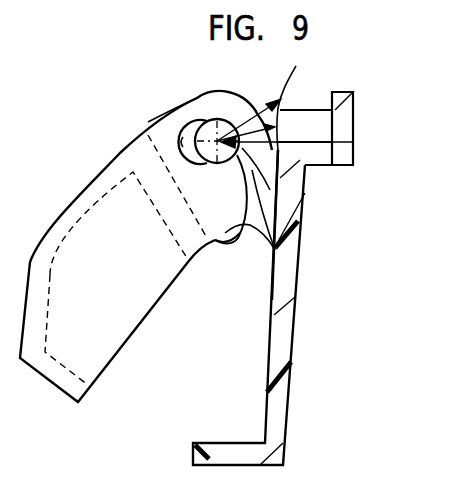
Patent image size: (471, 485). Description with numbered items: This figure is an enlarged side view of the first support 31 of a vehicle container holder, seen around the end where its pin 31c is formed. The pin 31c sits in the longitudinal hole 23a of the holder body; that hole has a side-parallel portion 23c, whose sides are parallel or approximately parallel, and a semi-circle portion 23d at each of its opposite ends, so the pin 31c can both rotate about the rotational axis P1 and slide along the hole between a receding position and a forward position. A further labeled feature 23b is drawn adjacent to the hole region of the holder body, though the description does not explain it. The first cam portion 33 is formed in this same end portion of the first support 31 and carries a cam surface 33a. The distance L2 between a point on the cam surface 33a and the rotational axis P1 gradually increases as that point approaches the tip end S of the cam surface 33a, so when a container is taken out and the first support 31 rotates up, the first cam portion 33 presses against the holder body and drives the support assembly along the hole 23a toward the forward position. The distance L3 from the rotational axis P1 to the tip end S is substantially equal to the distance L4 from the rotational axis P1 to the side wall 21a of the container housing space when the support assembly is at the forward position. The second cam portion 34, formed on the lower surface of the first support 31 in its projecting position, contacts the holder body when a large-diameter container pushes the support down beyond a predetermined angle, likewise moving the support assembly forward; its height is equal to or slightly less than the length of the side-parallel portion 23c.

The longitudinal hole 23a is at (183, 143).
The horizontal reference line 23b is at (318, 148).
The side-parallel portion 23c is at (195, 118).
The semi-circle portion 23d is at (180, 151).
The rotational axis P1 is at (217, 141).
The tip end S is at (259, 95).
The distance L2 is at (240, 130).
The distance L3 is at (262, 150).
The distance L4 is at (298, 200).
The first cam portion 33 is at (335, 110).
The cam surface 33a is at (333, 129).
The second cam portion 34 is at (276, 253).
The side wall 21a is at (293, 392).
The first support 31 is at (113, 342).
The pin 31c is at (217, 163).